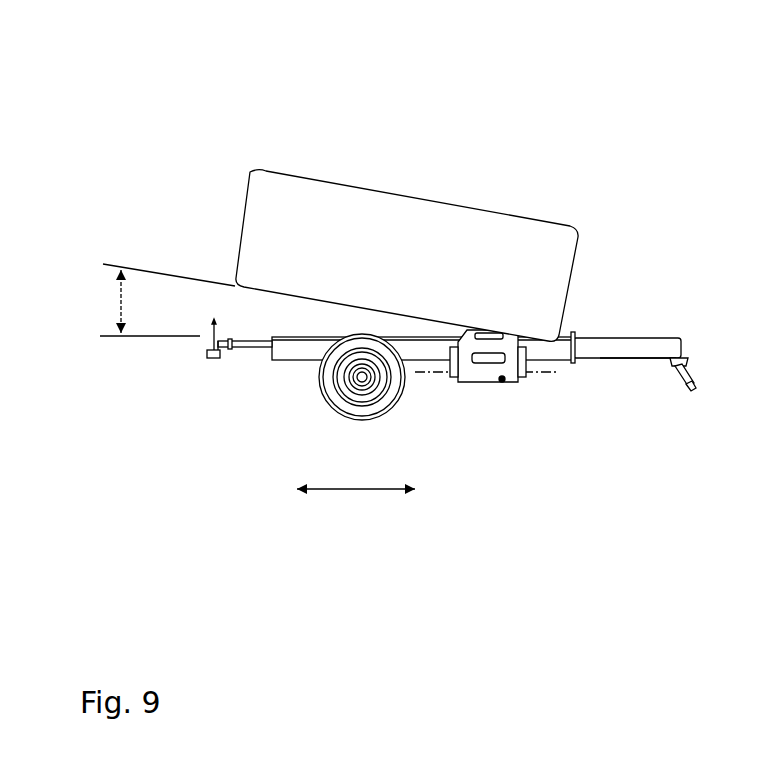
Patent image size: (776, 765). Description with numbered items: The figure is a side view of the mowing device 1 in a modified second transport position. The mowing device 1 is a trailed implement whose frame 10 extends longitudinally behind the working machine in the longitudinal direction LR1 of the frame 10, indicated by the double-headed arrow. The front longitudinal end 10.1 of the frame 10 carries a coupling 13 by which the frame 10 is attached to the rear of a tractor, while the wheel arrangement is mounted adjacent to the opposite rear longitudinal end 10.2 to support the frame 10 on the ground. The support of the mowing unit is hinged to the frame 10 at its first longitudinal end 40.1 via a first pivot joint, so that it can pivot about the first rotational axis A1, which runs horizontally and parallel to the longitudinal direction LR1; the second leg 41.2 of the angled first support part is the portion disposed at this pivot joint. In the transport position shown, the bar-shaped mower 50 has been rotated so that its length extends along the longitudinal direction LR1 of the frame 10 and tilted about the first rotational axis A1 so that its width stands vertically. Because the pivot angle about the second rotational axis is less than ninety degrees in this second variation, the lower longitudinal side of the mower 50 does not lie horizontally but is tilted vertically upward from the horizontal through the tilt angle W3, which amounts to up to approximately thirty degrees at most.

The mowing device 1 is at (531, 80).
The bar-shaped mower 50 is at (256, 168).
The frame 10 is at (626, 347).
The coupling 13 is at (696, 375).
The rear longitudinal end 10.2 is at (270, 365).
The first longitudinal end 40.1 is at (480, 395).
The second leg 41.2 is at (503, 380).
The first rotational axis A1 is at (545, 372).
The front longitudinal end 10.1 is at (656, 372).
The tilt angle W3 is at (120, 304).
The longitudinal direction LR1 is at (350, 490).